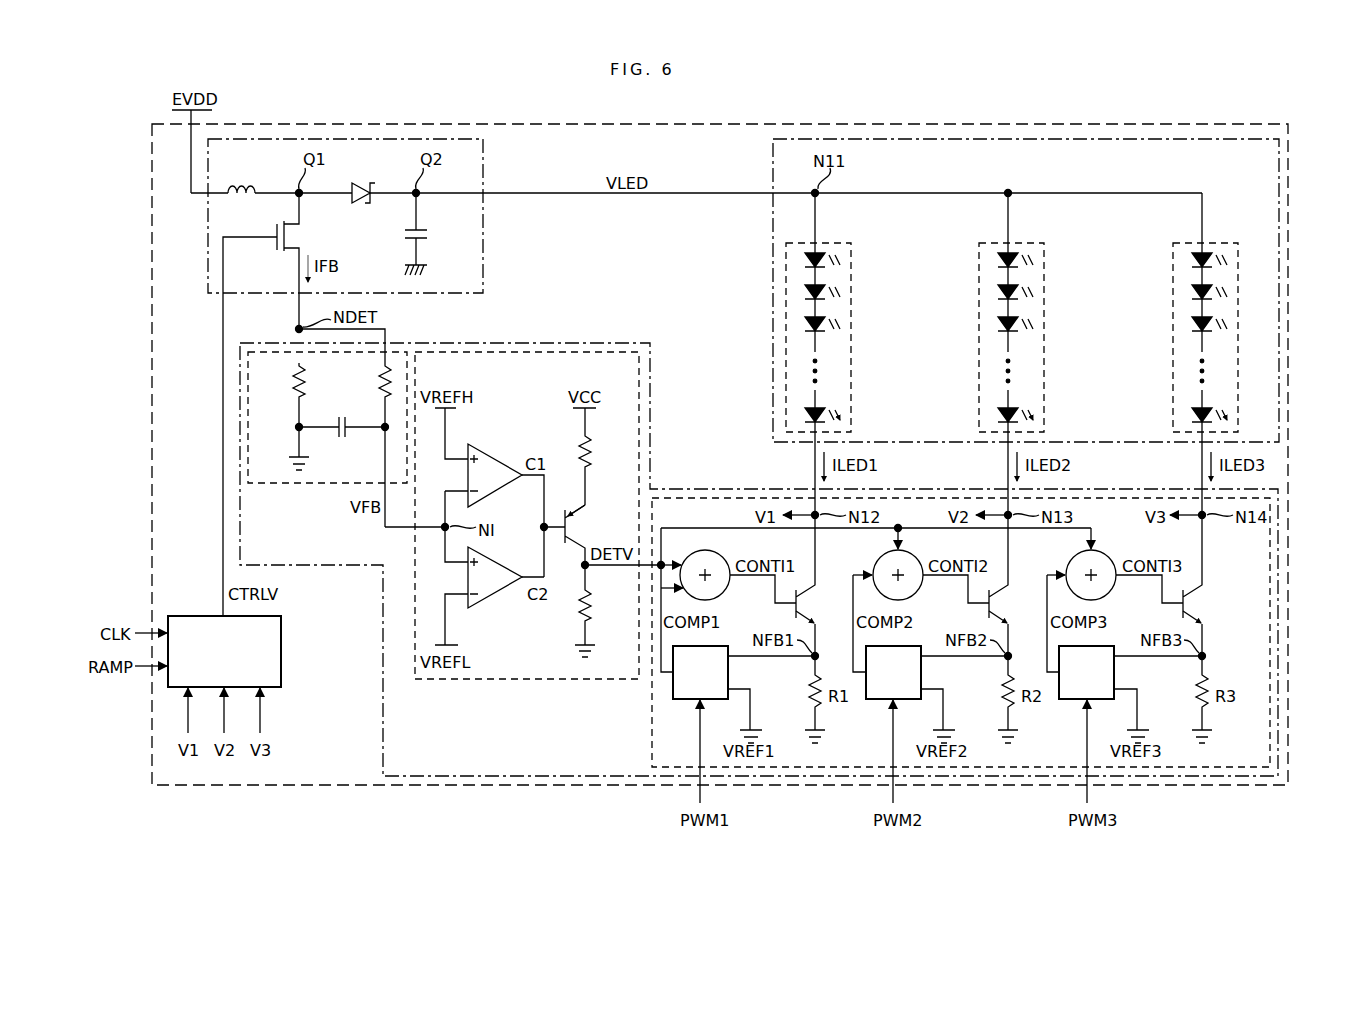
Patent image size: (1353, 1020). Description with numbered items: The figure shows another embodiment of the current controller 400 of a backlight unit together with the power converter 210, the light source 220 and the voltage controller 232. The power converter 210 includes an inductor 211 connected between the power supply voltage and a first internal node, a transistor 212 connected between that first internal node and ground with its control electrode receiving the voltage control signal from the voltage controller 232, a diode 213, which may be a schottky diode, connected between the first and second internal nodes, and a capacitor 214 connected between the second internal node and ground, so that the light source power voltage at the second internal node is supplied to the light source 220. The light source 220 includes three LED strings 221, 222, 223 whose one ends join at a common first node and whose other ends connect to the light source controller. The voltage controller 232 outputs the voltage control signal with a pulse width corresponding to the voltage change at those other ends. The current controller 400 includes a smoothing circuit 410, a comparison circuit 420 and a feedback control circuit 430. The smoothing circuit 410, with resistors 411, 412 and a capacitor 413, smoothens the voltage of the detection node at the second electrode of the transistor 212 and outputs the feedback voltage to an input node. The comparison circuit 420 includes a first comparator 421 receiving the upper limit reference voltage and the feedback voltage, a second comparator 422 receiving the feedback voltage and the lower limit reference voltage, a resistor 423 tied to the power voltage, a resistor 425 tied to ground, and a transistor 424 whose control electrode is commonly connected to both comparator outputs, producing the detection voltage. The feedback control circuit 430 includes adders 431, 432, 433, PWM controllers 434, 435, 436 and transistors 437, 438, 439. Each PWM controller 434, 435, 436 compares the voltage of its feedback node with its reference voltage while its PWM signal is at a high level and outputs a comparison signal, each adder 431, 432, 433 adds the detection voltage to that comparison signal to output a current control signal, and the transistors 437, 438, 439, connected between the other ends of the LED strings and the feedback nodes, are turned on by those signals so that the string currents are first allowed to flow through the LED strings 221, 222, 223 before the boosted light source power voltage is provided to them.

The power converter 210 is at (484, 158).
The inductor 211 is at (242, 179).
The transistor 212 is at (277, 404).
The diode 213 is at (372, 181).
The capacitor 214 is at (434, 234).
The light source 220 is at (772, 160).
The first LED string 221 is at (831, 243).
The second LED string 222 is at (1024, 243).
The third LED string 223 is at (1221, 243).
The voltage controller 232 is at (281, 650).
The current controller 400 is at (581, 341).
The smoothing circuit 410 is at (320, 486).
The resistor 411 is at (283, 416).
The resistor 412 is at (366, 445).
The capacitor 413 is at (342, 441).
The comparison circuit 420 is at (500, 682).
The first comparator 421 is at (493, 455).
The second comparator 422 is at (493, 598).
The resistor 423 is at (604, 469).
The transistor 424 is at (579, 535).
The resistor 425 is at (602, 611).
The feedback control circuit 430 is at (650, 727).
The adder 431 is at (712, 552).
The adder 432 is at (905, 552).
The adder 433 is at (1111, 552).
The PWM controller 434 is at (700, 672).
The PWM controller 435 is at (893, 672).
The PWM controller 436 is at (1086, 672).
The transistor 437 is at (819, 585).
The transistor 438 is at (1012, 585).
The transistor 439 is at (1207, 585).